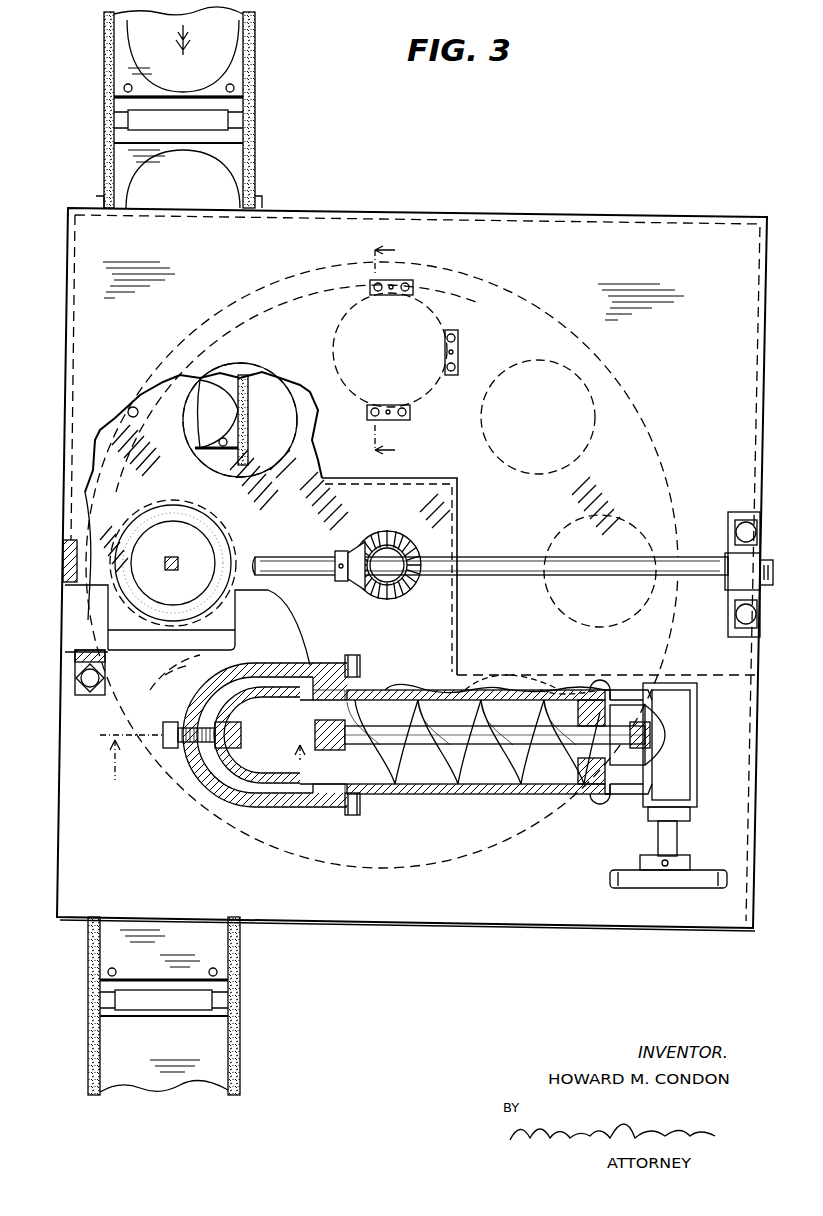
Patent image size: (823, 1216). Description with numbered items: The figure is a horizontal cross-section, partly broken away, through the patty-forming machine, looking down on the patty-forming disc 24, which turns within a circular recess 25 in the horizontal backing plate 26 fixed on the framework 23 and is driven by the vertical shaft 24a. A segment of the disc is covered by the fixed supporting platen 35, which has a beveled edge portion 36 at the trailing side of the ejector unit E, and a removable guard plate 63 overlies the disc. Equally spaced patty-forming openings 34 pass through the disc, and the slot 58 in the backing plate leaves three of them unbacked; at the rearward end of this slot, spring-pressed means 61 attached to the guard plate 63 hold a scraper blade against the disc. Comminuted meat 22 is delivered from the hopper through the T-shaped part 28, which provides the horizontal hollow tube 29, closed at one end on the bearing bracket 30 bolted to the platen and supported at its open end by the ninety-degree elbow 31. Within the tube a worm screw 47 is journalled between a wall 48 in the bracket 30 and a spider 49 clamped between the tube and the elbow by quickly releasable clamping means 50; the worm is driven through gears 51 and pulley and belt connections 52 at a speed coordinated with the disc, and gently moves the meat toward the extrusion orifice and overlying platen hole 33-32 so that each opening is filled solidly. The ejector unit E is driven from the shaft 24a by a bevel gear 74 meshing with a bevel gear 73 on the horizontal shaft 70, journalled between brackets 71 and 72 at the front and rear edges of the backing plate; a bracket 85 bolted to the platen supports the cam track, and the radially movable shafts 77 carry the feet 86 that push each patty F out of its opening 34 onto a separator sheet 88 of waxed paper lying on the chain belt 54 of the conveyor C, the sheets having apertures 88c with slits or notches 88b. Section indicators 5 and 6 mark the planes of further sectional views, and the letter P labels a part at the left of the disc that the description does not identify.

The separator sheet of waxed paper 88 is at (250, 16).
The slits or notches 88b is at (118, 96).
The paper apertures 88c is at (124, 86).
The patty F is at (230, 50).
The conveyor C is at (93, 96).
The paper web P is at (77, 463).
The patty-ejecting unit E is at (138, 636).
The chain belt 54 is at (126, 125).
The removable guard plate 63 is at (593, 222).
The slot 58 is at (277, 300).
The patty-forming disc 24 is at (93, 470).
The vertical shaft 24a is at (398, 598).
The circular recess 25 is at (133, 410).
The horizontal backing plate 26 is at (80, 490).
The patty-forming openings 34 is at (432, 318).
The spring-pressed means 61 is at (400, 283).
The section line 6- 6 is at (399, 347).
The section line 5- 5 is at (202, 770).
The foot 86 is at (215, 560).
The shaft 77 is at (165, 563).
The bracket 71 is at (66, 548).
The beveled edge portion 36 is at (210, 637).
The bracket 85 is at (72, 662).
The bevel gear 74 is at (385, 532).
The horizontal shaft 70 is at (337, 553).
The bevel gear 73 is at (352, 580).
The bracket 72 is at (731, 560).
The T-shaped part 28 is at (272, 800).
The elbow 31 is at (238, 790).
The clamping means 50 is at (180, 742).
The spider 49 is at (347, 660).
The worm screw 47 is at (410, 795).
The hollow tube 29 is at (458, 795).
The platen hole and extrusion orifice 33-32 is at (312, 808).
The comminuted meat 22 is at (470, 690).
The wall 48 is at (592, 780).
The gears 51 is at (665, 738).
The bearing bracket 30 is at (690, 775).
The pulley and belt connections 52 is at (640, 888).
The supporting platen 35 is at (455, 918).
The framework 23 is at (551, 922).